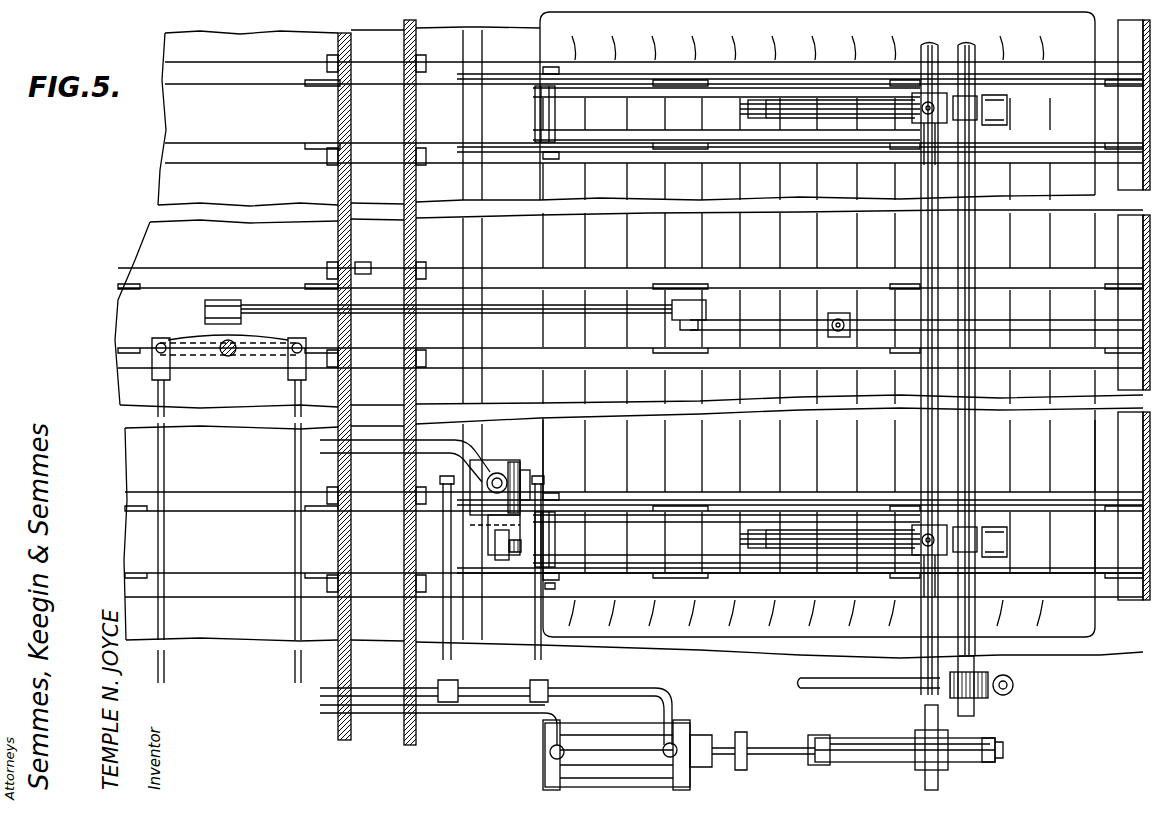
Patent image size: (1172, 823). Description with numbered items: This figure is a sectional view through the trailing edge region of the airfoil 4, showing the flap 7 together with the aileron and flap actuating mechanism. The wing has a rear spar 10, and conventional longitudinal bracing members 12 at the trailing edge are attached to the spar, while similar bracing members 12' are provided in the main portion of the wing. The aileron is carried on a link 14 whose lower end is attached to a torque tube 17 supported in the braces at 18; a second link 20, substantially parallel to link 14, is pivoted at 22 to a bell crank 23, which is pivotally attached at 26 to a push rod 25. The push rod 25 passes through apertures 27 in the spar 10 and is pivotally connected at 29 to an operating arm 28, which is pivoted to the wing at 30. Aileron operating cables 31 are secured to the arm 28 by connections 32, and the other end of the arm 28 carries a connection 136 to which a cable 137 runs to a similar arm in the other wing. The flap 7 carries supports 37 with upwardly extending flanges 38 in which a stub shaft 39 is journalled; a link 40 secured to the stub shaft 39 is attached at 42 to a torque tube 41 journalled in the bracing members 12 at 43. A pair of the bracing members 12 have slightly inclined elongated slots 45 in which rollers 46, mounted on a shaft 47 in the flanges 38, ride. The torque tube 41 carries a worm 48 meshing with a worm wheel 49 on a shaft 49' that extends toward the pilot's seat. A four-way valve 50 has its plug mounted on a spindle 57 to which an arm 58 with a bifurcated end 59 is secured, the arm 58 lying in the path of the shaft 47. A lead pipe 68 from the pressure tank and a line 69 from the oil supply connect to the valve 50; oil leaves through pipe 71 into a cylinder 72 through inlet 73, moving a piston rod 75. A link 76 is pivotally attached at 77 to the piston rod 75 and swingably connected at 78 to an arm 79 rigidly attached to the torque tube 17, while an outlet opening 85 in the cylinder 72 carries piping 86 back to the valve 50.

The airfoil 4 is at (266, 657).
The flap 7 is at (530, 253).
The rear spar 10 is at (380, 742).
The bracing members 12 is at (630, 359).
The bracing members 12' is at (602, 309).
The link 14 is at (922, 95).
The torque tube 17 is at (945, 48).
The support of torque tube in braces 18 is at (920, 140).
The second link 20 is at (850, 322).
The pivot 22 is at (838, 318).
The bell crank 23 is at (758, 322).
The push rod 25 is at (497, 322).
The pivotal attachment 26 is at (706, 307).
The apertures 27 is at (354, 296).
The operating arm 28 is at (212, 372).
The pivotal connection 29 is at (203, 310).
The pivot 30 is at (238, 356).
The aileron operating cables 31 is at (165, 460).
The connections 32 is at (150, 365).
The supports 37 is at (674, 66).
The flanges 38 is at (678, 100).
The stub shaft 39 is at (745, 109).
The link 40 is at (838, 118).
The torque tube 41 is at (978, 173).
The attachment of link to torque tube 42 is at (980, 544).
The journal in bracing members 43 is at (1005, 118).
The elongated slots 45 is at (498, 72).
The rollers 46 is at (556, 68).
The shaft 47 is at (535, 113).
The worm 48 is at (985, 675).
The worm wheel 49 is at (1020, 691).
The shaft 49' is at (869, 697).
The valve 50 is at (515, 464).
The spindle 57 is at (488, 522).
The arm 58 is at (503, 560).
The bifurcated end 59 is at (560, 590).
The lead pipe 68 is at (446, 452).
The line 69 is at (490, 470).
The pipe 71 is at (542, 484).
The cylinder 72 is at (608, 732).
The inlet 73 is at (663, 745).
The piston rod 75 is at (760, 746).
The link 76 is at (891, 746).
The pivotal attachment 77 is at (834, 764).
The swingable connection 78 is at (970, 765).
The arm 79 is at (1003, 750).
The outlet opening 85 is at (566, 748).
The piping 86 is at (440, 540).
The connection 136 is at (300, 360).
The cable 137 is at (295, 465).